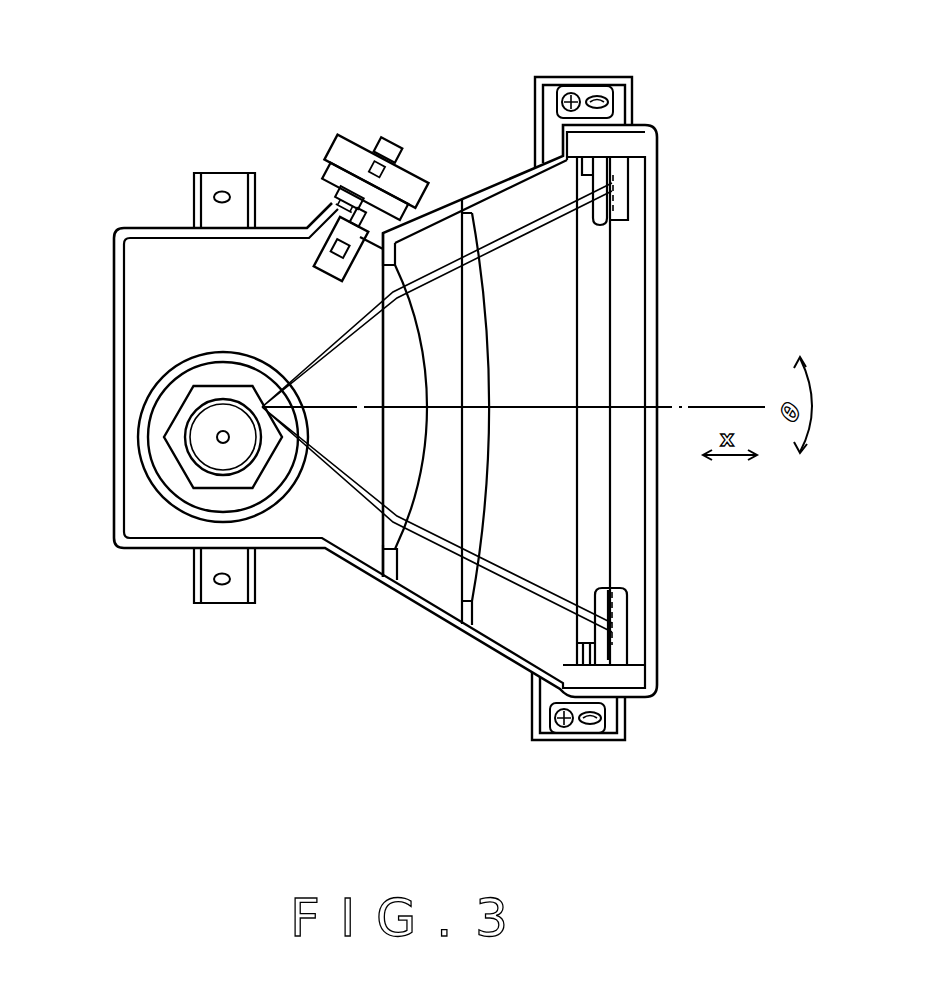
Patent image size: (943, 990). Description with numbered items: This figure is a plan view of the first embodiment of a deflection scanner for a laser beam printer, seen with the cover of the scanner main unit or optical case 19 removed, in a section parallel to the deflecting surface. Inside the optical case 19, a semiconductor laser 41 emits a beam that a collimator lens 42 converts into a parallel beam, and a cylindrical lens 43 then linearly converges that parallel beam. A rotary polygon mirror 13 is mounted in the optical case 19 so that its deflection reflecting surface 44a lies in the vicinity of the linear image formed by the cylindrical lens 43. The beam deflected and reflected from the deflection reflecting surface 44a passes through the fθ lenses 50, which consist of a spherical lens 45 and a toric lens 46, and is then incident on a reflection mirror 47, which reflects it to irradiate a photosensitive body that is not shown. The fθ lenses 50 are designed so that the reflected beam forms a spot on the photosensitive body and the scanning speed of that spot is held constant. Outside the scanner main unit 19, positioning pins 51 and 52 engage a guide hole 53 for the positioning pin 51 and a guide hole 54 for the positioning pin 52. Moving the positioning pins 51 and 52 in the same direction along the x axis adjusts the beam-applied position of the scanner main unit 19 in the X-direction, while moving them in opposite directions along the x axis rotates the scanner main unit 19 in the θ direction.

The rotary polygon mirror 13 is at (190, 467).
The scanner main unit (optical case) 19 is at (118, 228).
The semiconductor laser 41 is at (396, 146).
The collimator lens 42 is at (364, 157).
The cylindrical lens 43 is at (320, 232).
The deflection reflecting surface 44a is at (264, 404).
The spherical lens 45 is at (400, 505).
The toric lens 46 is at (468, 540).
The reflection mirror 47 is at (617, 205).
The fθ lenses 50 is at (443, 488).
The positioning pin 51 is at (628, 82).
The positioning pin 52 is at (592, 727).
The guide hole 53 is at (592, 100).
The guide hole 54 is at (603, 722).